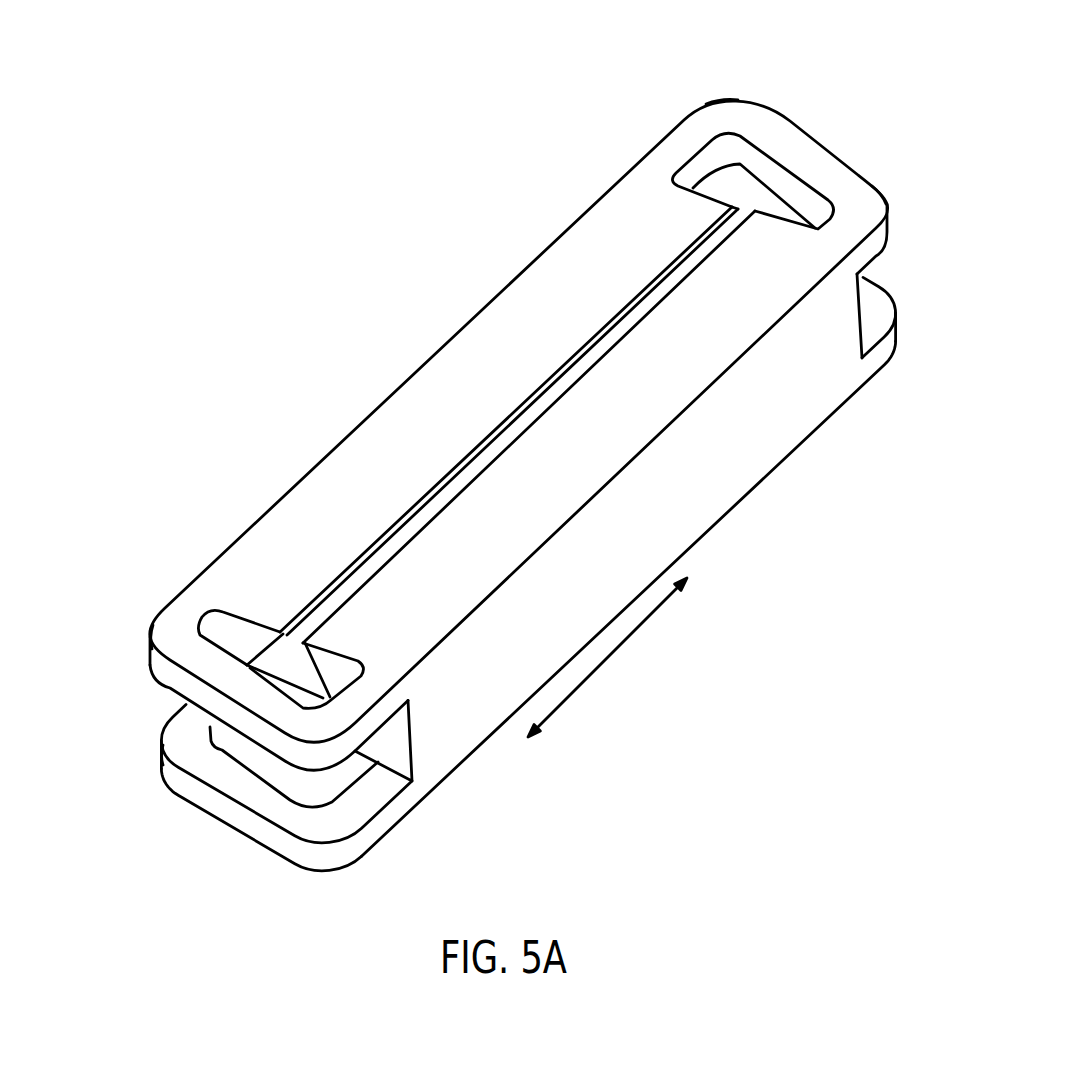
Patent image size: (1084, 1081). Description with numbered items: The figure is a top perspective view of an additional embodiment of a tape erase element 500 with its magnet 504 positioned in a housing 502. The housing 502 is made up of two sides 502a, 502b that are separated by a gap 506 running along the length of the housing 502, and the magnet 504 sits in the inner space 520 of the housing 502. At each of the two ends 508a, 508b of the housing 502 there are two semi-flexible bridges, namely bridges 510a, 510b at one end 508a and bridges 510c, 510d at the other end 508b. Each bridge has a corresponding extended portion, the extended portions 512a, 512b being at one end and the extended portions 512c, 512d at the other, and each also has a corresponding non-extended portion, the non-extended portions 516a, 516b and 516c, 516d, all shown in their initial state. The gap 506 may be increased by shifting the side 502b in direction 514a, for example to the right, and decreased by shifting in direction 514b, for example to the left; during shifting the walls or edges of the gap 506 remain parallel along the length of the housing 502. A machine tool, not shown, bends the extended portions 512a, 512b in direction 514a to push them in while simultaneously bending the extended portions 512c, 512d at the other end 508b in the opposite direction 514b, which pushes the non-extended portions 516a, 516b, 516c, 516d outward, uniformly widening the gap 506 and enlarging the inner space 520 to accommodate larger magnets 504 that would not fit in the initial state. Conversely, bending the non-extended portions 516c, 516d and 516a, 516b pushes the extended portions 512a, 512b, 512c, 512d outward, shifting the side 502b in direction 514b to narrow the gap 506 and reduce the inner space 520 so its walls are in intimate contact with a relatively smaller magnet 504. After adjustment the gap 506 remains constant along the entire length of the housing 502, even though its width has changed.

The tape erase element 500 is at (417, 342).
The housing 502 is at (497, 302).
The side 502a is at (560, 283).
The side 502b is at (620, 434).
The magnet 504 is at (527, 423).
The gap 506 is at (723, 230).
The end 508a is at (136, 670).
The end 508b is at (880, 132).
The semi-flexible bridge 510a is at (232, 688).
The semi-flexible bridge 510b is at (232, 785).
The semi-flexible bridge 510c is at (808, 146).
The semi-flexible bridge 510d is at (888, 297).
The extended portion 512a is at (358, 752).
The extended portion 512b is at (337, 830).
The extended portion 512c is at (706, 110).
The extended portion 512d is at (747, 204).
The direction 514a is at (690, 583).
The direction 514b is at (531, 737).
The non-extended portion 516a is at (153, 635).
The non-extended portion 516b is at (165, 752).
The non-extended portion 516c is at (873, 189).
The non-extended portion 516d is at (898, 332).
The inner space 520 is at (295, 655).